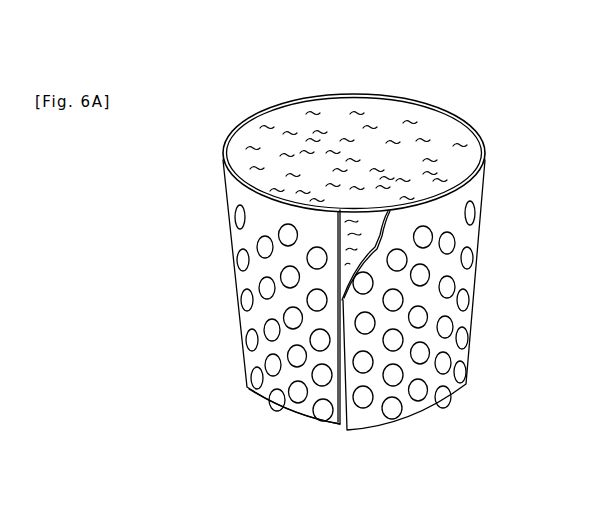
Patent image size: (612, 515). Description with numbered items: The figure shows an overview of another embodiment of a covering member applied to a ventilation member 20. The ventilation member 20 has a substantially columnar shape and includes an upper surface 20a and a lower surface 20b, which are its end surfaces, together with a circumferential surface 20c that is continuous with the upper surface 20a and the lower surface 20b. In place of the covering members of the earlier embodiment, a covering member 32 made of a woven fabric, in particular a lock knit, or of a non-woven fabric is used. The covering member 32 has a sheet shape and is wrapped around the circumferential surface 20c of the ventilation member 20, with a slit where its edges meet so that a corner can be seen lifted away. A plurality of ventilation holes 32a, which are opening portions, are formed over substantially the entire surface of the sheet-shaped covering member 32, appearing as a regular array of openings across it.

The ventilation member 20 is at (392, 124).
The upper surface 20a is at (335, 117).
The lower surface 20b is at (308, 423).
The circumferential surface 20c is at (338, 248).
The covering member 32 is at (470, 278).
The ventilation hole 32a is at (268, 328).